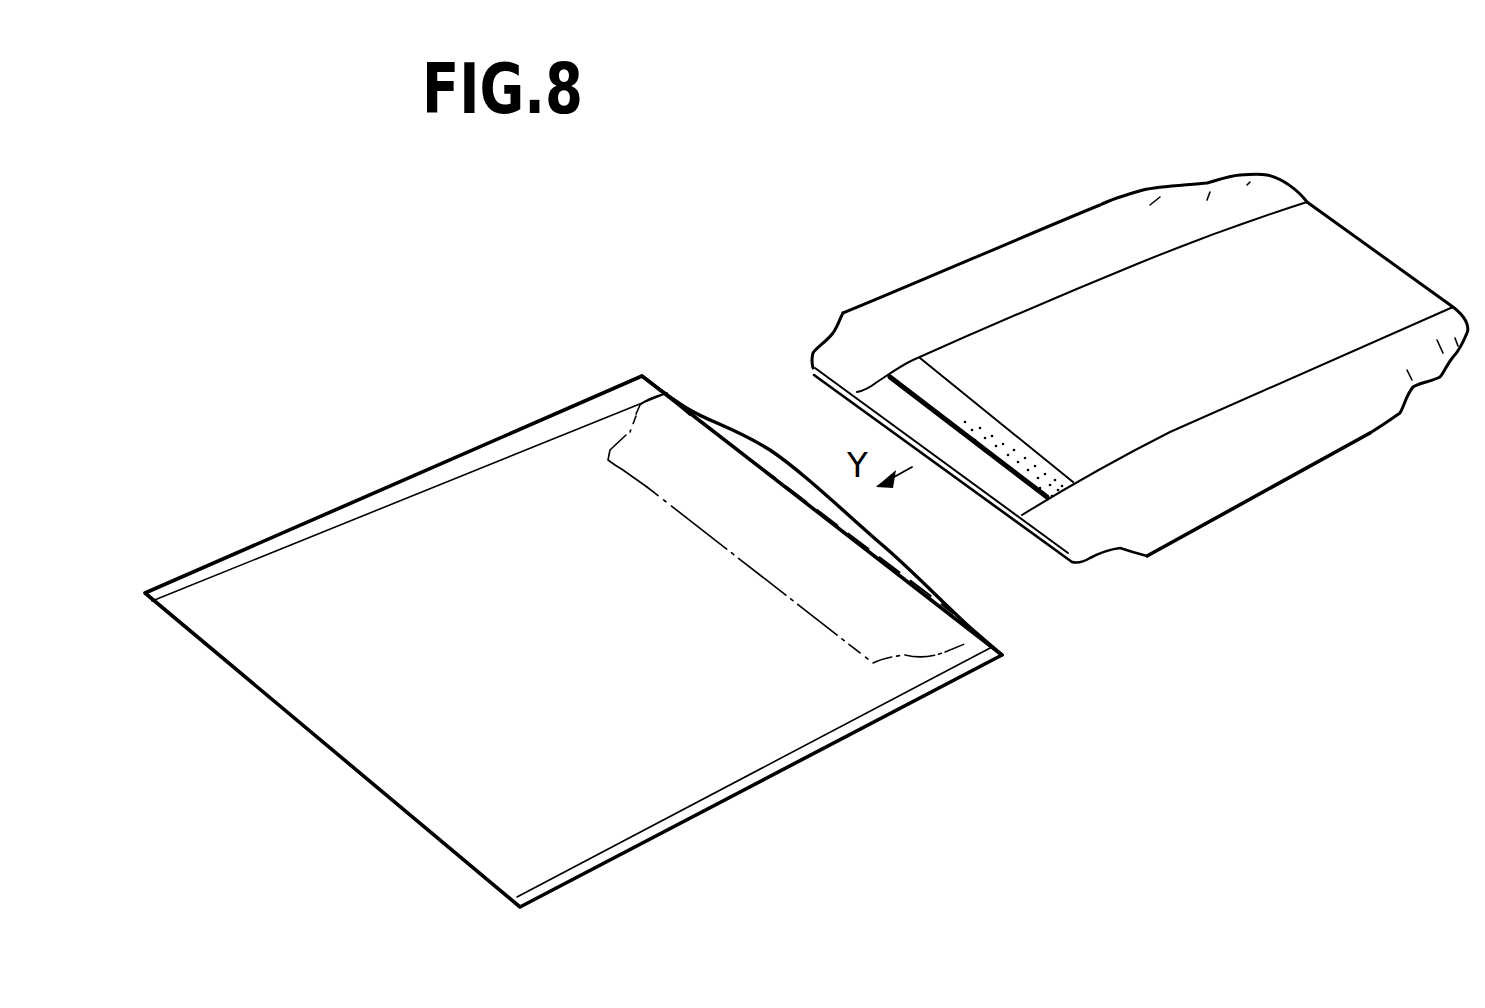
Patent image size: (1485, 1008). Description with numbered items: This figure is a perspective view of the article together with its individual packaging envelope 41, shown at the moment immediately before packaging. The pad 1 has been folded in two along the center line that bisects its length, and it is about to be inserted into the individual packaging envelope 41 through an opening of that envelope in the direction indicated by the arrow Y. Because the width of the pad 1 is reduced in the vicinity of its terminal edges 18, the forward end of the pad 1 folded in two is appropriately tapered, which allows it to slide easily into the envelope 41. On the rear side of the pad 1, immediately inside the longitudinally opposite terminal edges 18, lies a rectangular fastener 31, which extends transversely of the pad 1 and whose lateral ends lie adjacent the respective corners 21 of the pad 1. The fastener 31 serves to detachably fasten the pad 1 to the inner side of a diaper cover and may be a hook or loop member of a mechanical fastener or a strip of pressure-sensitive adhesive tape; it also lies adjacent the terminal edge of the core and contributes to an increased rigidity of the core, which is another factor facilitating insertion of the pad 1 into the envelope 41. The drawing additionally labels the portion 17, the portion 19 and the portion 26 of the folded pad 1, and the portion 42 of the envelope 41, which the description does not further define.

The pad 1 is at (1128, 385).
The bottom edge portion 17 is at (1293, 480).
The terminal edges 18 is at (977, 487).
The corner portion 19 is at (830, 337).
The corners 21 is at (1108, 532).
The top face 26 is at (1047, 240).
The fasteners 31 is at (1002, 404).
The individual packaging envelope 41 is at (454, 452).
The flap 42 is at (743, 443).